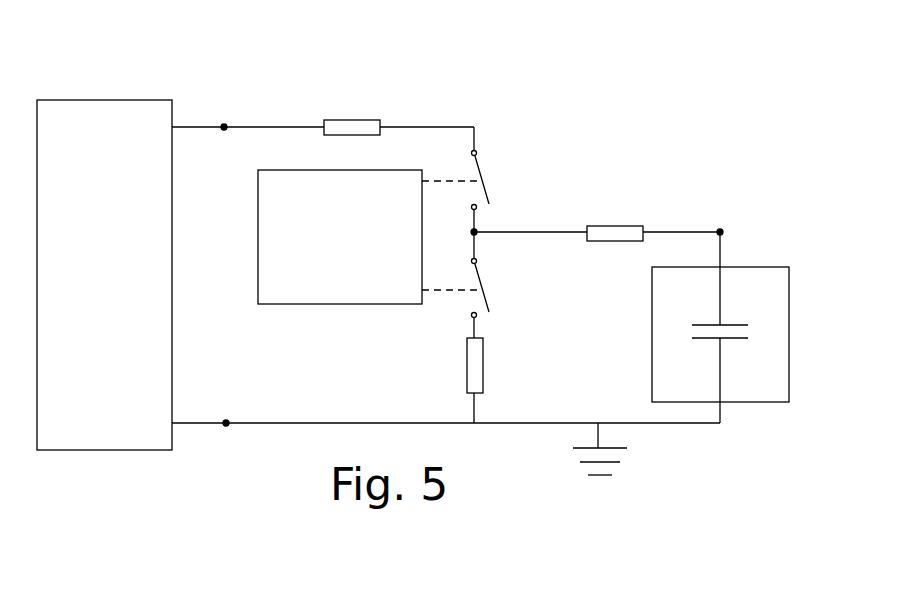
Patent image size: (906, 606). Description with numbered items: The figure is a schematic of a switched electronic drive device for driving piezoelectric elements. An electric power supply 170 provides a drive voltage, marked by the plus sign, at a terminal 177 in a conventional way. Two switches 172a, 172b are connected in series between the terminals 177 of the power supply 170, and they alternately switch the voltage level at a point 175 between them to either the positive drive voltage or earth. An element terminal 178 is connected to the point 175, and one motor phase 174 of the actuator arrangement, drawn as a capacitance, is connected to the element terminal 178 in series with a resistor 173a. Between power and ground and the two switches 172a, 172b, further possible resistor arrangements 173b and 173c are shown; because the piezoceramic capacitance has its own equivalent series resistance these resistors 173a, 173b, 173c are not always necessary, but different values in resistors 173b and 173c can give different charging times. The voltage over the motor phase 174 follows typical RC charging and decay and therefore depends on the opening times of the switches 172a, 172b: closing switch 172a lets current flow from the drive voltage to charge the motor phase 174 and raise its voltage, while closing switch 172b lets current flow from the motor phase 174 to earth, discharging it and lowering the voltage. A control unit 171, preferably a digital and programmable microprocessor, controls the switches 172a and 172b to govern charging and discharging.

The electric power supply 170 is at (112, 120).
The control unit 171 is at (300, 258).
The switch 172a is at (480, 182).
The switch 172b is at (481, 287).
The resistor 173a is at (628, 226).
The resistor 173b is at (368, 127).
The resistor 173c is at (484, 372).
The motor phase 174 is at (770, 387).
The point between the switches 175 is at (478, 235).
The terminal 177 is at (224, 127).
The element terminal 178 is at (720, 232).